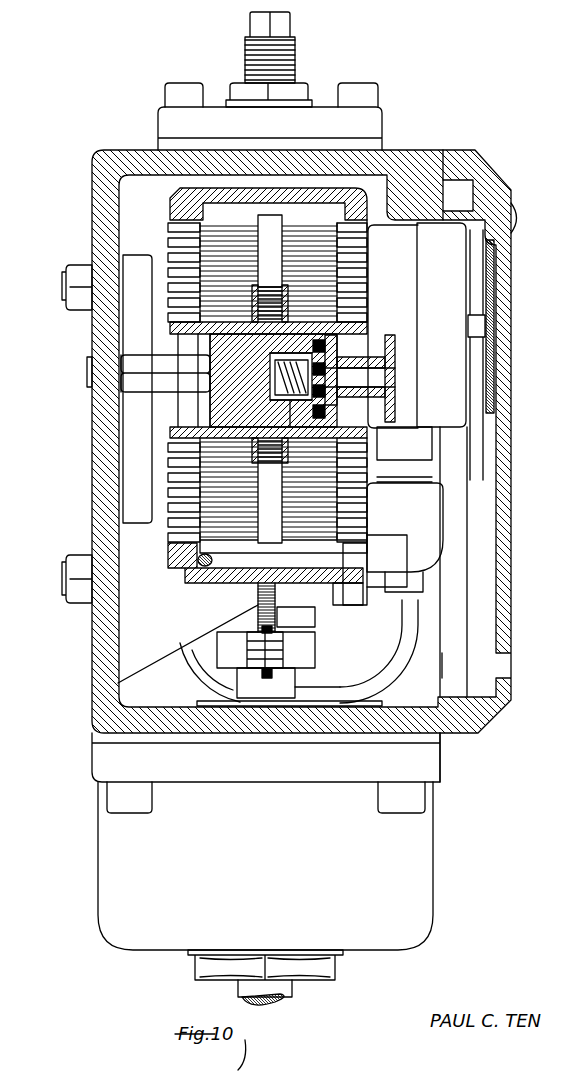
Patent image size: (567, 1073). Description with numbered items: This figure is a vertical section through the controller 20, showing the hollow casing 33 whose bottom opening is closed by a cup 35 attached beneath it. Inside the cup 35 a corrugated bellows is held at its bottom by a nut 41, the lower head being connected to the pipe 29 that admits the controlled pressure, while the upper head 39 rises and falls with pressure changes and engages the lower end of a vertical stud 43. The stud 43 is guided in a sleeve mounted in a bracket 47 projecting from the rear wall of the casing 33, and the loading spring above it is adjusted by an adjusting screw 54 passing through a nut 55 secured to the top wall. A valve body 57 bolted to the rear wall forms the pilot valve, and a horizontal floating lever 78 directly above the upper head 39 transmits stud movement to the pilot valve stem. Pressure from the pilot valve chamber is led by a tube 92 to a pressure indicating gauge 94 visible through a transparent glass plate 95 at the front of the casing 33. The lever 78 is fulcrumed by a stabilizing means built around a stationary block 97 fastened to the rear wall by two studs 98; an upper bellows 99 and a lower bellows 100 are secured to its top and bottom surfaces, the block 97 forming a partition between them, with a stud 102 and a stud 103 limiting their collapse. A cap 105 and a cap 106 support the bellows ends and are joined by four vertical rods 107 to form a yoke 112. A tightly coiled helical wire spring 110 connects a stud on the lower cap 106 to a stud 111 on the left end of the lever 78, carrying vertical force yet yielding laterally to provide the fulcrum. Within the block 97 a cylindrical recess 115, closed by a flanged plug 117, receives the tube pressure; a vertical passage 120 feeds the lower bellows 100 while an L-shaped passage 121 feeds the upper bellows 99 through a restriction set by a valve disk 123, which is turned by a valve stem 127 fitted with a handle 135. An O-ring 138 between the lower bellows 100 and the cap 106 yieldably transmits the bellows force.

The controller 20 is at (492, 789).
The pipe 29 is at (293, 992).
The casing 33 is at (92, 654).
The cup 35 is at (428, 875).
The upper head 39 is at (205, 702).
The nut 41 is at (336, 972).
The stud 43 is at (290, 677).
The bracket 47 is at (358, 600).
The adjusting screw 54 is at (296, 63).
The nut 55 is at (375, 124).
The valve body 57 is at (140, 270).
The floating lever 78 is at (316, 648).
The tube 92 is at (390, 668).
The pressure indicating gauge 94 is at (417, 460).
The transparent glass plate 95 is at (485, 323).
The block 97 is at (218, 343).
The studs 98 is at (163, 385).
The bellows 99 is at (168, 240).
The bellows 100 is at (170, 530).
The stud 102 is at (262, 210).
The stud 103 is at (260, 540).
The cap 105 is at (172, 212).
The cap 106 is at (175, 566).
The vertical rods 107 is at (165, 373).
The helical wire spring 110 is at (258, 598).
The stud 111 is at (272, 680).
The yoke 112 is at (330, 588).
The cylindrical recess 115 is at (297, 361).
The flanged plug 117 is at (343, 360).
The vertical passage 120 is at (268, 420).
The L-shaped passage 121 is at (272, 407).
The valve disk 123 is at (283, 340).
The valve stem 127 is at (392, 378).
The handle 135 is at (396, 362).
The O-ring 138 is at (203, 570).